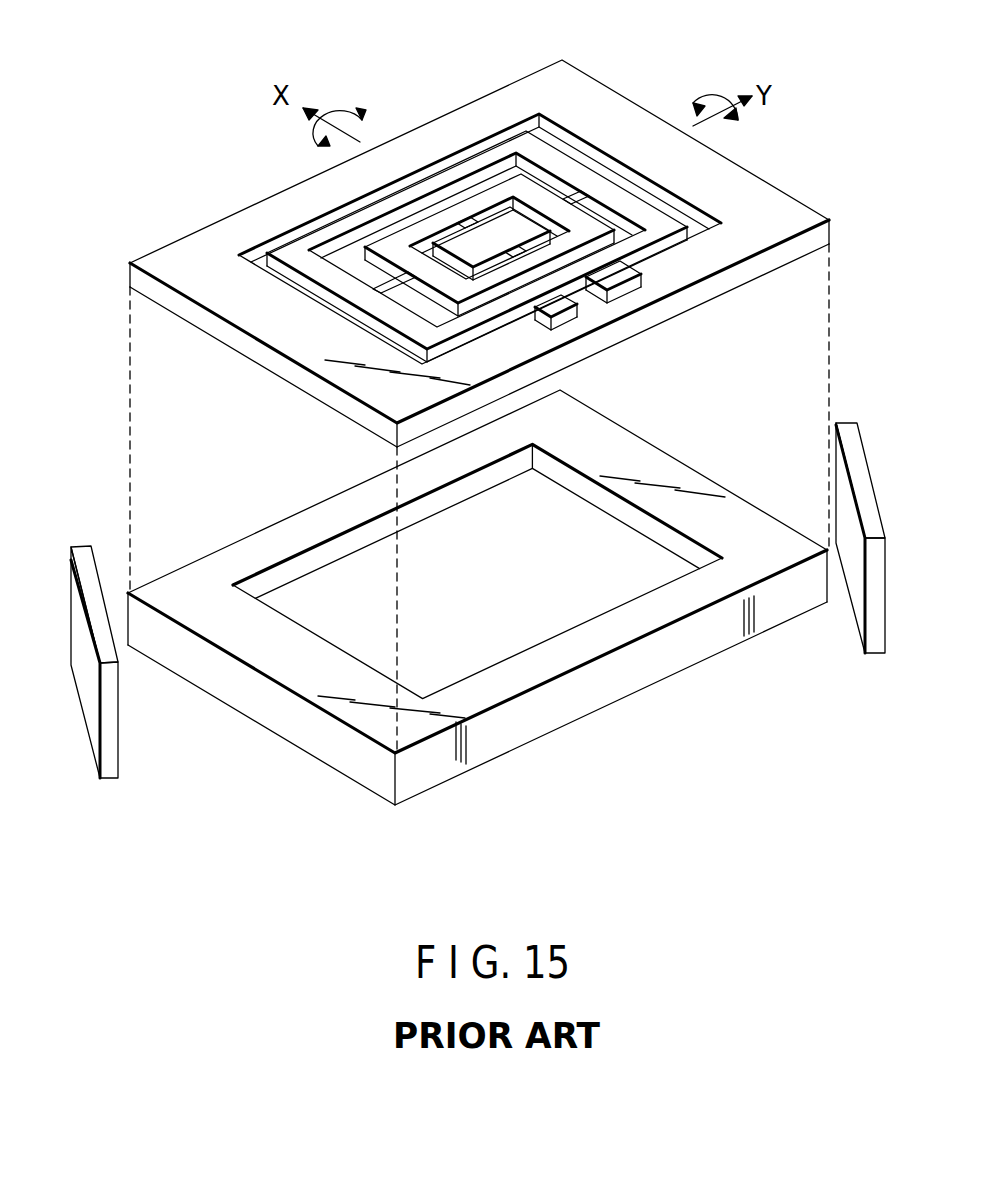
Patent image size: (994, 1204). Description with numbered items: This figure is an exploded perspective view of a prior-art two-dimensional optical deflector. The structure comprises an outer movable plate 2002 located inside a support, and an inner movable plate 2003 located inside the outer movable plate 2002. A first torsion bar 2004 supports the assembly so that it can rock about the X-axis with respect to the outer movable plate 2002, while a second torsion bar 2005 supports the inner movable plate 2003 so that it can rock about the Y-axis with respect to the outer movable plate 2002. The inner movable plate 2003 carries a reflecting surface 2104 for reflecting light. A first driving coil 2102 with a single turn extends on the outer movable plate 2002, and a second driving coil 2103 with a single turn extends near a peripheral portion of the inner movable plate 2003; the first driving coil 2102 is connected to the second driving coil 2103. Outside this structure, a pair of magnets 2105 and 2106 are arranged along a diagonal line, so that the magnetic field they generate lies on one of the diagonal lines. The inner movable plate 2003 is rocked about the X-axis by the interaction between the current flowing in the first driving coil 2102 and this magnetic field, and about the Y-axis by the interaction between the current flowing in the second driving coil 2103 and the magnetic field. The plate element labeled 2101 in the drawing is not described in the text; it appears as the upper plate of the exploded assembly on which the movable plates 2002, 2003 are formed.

The substrate plate 2101 is at (536, 78).
The first driving coil 2102 is at (479, 242).
The inner movable plate 2003 is at (487, 197).
The reflecting surface 2104 is at (405, 273).
The second torsion bar 2005 is at (330, 262).
The outer movable plate 2002 is at (668, 222).
The second driving coil 2103 is at (607, 263).
The first torsion bar 2004 is at (568, 293).
The magnet 2105 is at (115, 732).
The magnet 2106 is at (877, 655).